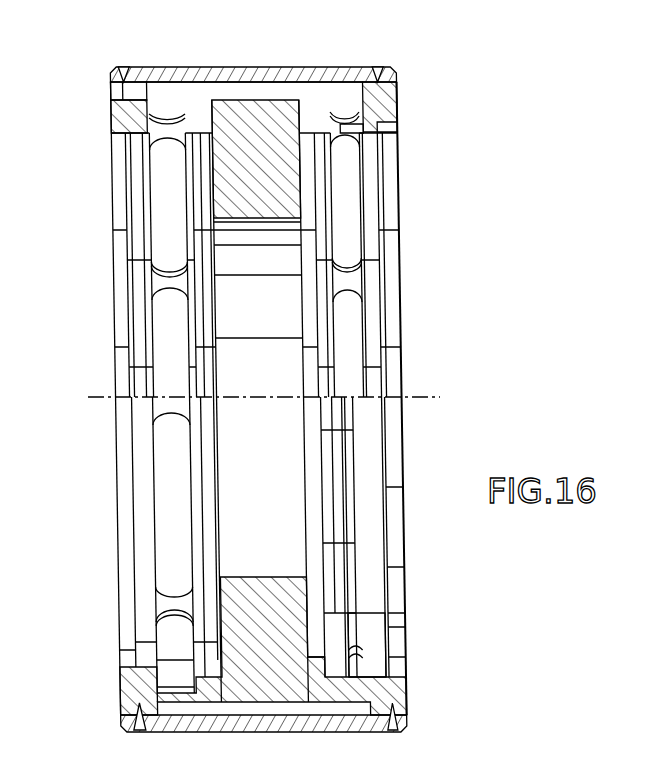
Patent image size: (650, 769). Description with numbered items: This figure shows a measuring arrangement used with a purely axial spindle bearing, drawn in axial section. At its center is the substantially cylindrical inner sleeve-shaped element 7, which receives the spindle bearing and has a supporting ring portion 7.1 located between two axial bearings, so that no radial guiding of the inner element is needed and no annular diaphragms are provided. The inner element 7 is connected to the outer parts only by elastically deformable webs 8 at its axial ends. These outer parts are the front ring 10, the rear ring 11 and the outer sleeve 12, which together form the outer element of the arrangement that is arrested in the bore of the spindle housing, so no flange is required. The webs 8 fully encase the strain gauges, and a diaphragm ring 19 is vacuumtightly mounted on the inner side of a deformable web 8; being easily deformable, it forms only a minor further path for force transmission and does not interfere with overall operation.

The inner sleeve-shaped element 7 is at (263, 118).
The supporting ring portion 7.1 is at (270, 205).
The elastically deformable webs 8 is at (168, 133).
The front ring 10 is at (125, 117).
The rear ring 11 is at (392, 104).
The outer sleeve 12 is at (241, 74).
The diaphragm ring 19 is at (353, 640).